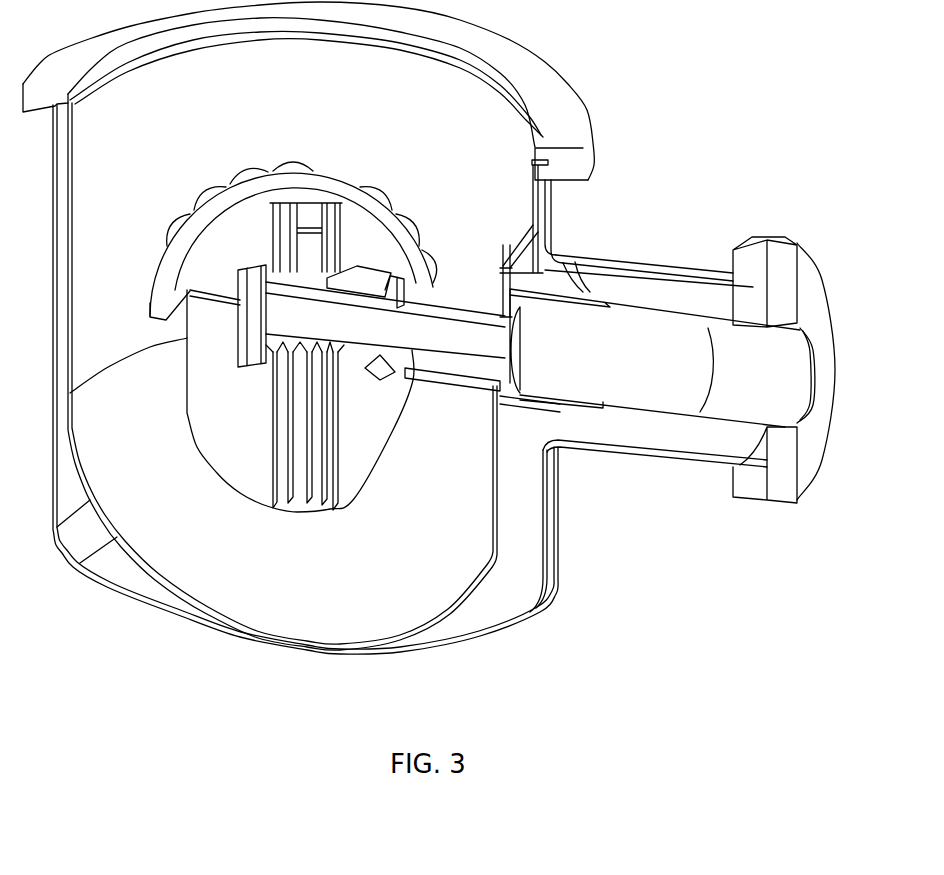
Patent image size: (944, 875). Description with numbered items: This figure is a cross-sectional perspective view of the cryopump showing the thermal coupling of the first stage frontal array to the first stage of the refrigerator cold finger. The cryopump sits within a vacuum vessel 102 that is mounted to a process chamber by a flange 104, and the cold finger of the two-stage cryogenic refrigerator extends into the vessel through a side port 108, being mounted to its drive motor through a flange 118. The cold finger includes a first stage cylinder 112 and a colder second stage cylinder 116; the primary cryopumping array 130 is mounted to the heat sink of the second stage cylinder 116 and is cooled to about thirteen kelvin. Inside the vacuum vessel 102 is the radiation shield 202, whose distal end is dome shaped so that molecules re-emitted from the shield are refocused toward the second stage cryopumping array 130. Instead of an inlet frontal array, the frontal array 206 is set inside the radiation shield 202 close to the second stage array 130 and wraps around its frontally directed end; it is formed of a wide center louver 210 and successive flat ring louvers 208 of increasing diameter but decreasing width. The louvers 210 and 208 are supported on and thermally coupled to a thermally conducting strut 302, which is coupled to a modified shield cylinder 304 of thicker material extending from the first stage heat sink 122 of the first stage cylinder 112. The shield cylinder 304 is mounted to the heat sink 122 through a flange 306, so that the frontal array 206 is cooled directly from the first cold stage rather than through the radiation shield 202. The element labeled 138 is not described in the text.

The vacuum vessel 102 is at (558, 554).
The flange 104 is at (572, 97).
The side port 108 is at (648, 454).
The first stage cylinder 112 is at (648, 272).
The second stage cylinder 116 is at (390, 358).
The flange 118 is at (800, 487).
The first stage heat sink 122 is at (525, 392).
The primary cryopumping array 130 is at (341, 516).
The bracket 138 is at (392, 380).
The radiation shield 202 is at (75, 201).
The frontal array 206 is at (352, 171).
The louvers 208 is at (374, 200).
The wide center louver 210 is at (300, 168).
The thermally conducting strut 302 is at (153, 323).
The shield cylinder 304 is at (448, 392).
The flange 306 is at (495, 273).